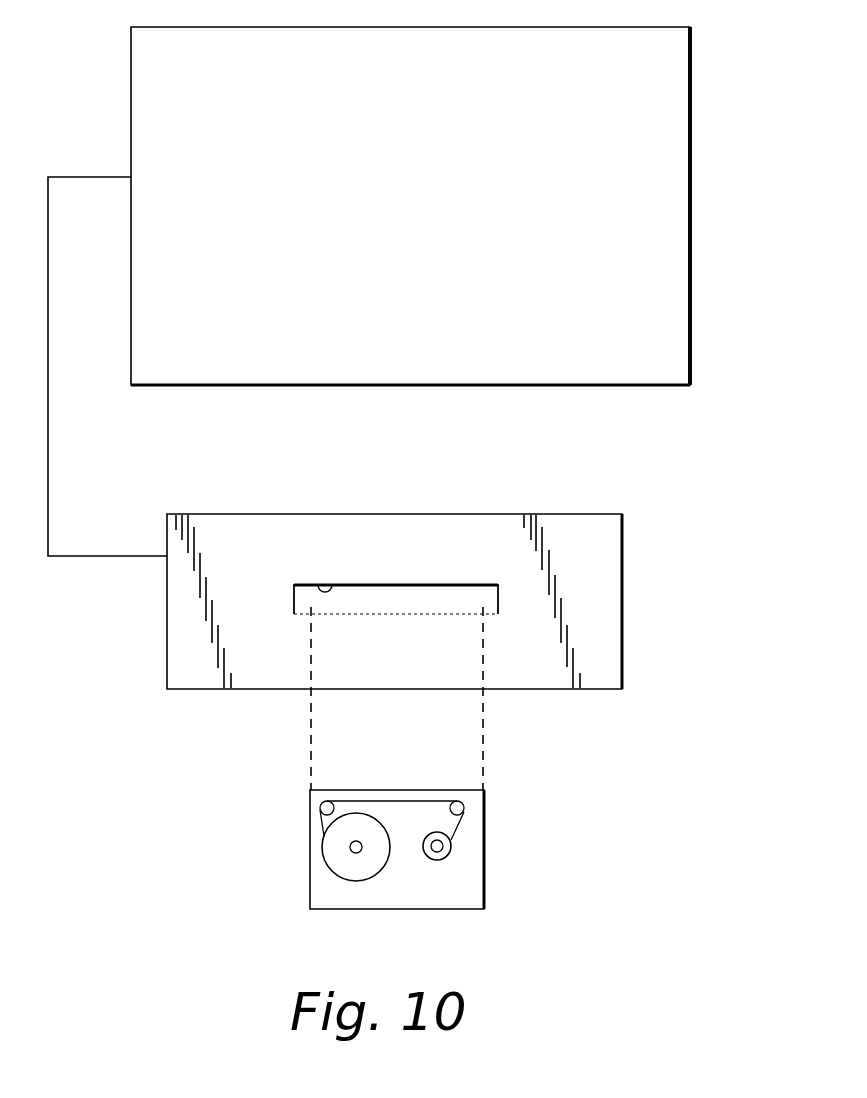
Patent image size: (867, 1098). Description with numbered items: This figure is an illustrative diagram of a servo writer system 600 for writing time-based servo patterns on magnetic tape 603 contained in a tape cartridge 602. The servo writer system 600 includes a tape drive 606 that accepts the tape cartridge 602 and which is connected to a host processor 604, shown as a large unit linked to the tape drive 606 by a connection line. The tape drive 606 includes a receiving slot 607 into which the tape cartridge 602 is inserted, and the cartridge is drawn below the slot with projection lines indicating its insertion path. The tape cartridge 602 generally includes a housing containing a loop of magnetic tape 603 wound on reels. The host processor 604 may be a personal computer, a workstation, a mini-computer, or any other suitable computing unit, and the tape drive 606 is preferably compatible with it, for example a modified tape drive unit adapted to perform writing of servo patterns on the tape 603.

The servo writer system 600 is at (657, 726).
The tape cartridge 602 is at (486, 877).
The tape 603 is at (317, 827).
The host processor 604 is at (694, 262).
The tape drive 606 is at (625, 553).
The receiving slot 607 is at (320, 585).